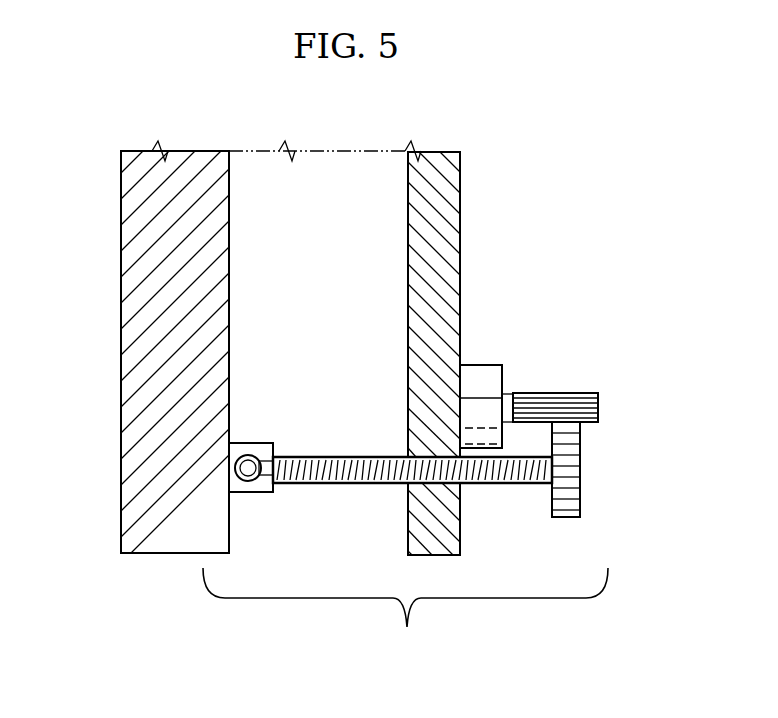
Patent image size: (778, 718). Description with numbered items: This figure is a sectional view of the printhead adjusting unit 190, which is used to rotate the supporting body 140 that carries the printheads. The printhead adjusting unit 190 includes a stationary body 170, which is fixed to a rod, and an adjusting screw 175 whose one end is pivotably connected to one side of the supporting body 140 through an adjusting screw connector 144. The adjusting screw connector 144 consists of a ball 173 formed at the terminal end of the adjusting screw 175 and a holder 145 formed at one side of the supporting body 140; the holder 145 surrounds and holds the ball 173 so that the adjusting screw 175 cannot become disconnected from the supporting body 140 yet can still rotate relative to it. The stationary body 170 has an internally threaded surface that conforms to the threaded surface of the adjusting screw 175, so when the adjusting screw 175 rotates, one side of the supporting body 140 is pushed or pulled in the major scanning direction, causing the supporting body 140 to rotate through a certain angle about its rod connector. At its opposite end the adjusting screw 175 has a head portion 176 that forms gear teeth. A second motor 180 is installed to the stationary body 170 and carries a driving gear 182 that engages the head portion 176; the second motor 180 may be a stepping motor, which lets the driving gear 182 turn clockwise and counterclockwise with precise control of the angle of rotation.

The supporting body 140 is at (133, 400).
The stationary body 170 is at (447, 278).
The ball 173 is at (253, 455).
The adjusting screw connector 144 is at (290, 437).
The holder 145 is at (257, 493).
The adjusting screw 175 is at (485, 485).
The head portion 176 is at (577, 497).
The second motor 180 is at (470, 378).
The driving gear 182 is at (563, 395).
The printhead adjusting unit 190 is at (405, 620).